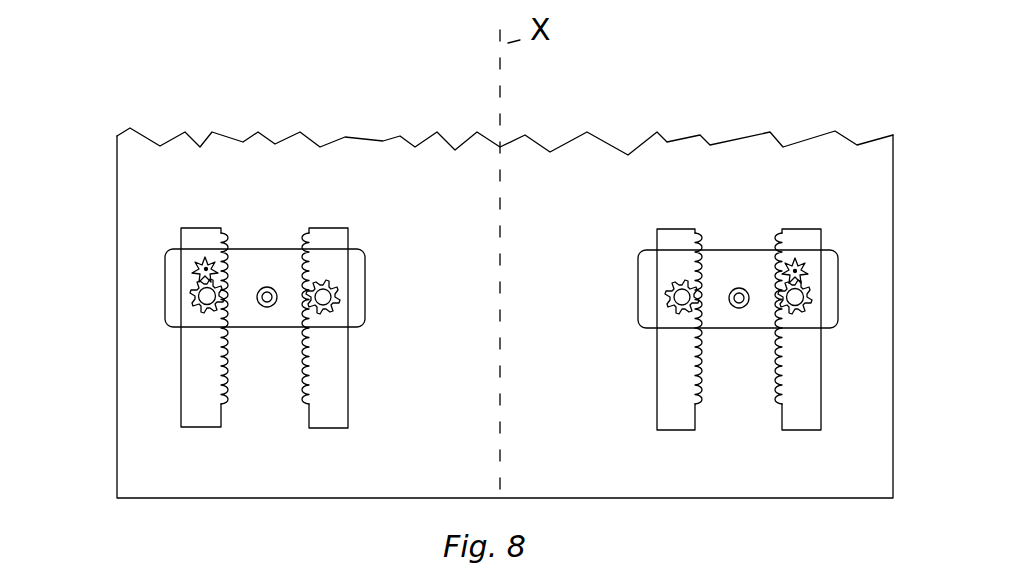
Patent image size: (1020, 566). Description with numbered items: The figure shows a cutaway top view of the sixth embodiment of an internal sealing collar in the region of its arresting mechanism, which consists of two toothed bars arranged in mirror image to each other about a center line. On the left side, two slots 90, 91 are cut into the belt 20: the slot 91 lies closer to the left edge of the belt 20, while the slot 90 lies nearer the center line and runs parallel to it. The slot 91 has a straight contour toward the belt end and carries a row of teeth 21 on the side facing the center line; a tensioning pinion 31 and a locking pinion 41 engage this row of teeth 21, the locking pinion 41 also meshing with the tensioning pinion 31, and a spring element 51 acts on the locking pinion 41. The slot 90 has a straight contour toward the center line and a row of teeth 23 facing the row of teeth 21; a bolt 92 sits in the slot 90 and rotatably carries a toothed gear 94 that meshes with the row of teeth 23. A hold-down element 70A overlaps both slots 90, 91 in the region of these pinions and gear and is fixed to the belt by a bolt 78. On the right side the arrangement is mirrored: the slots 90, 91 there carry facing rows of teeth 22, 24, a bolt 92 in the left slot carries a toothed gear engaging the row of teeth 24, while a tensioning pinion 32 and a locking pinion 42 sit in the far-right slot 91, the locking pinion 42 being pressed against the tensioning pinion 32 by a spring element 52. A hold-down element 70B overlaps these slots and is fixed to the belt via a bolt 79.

The belt 20 is at (498, 155).
The row of teeth 21 is at (220, 399).
The row of teeth 22 is at (782, 403).
The row of teeth 23 is at (305, 366).
The row of teeth 24 is at (697, 404).
The tensioning pinion 31 is at (205, 311).
The tensioning pinion 32 is at (797, 315).
The locking pinion 41 is at (205, 269).
The locking pinion 42 is at (797, 270).
The spring element 51 is at (145, 361).
The spring element 52 is at (859, 346).
The hold-down element 70A is at (241, 262).
The hold-down element 70B is at (751, 263).
The bolt 78 is at (263, 286).
The bolt 79 is at (739, 278).
The slot 90 is at (504, 337).
The slot 91 is at (502, 360).
The bolt 92 is at (502, 279).
The toothed gear 94 is at (338, 300).